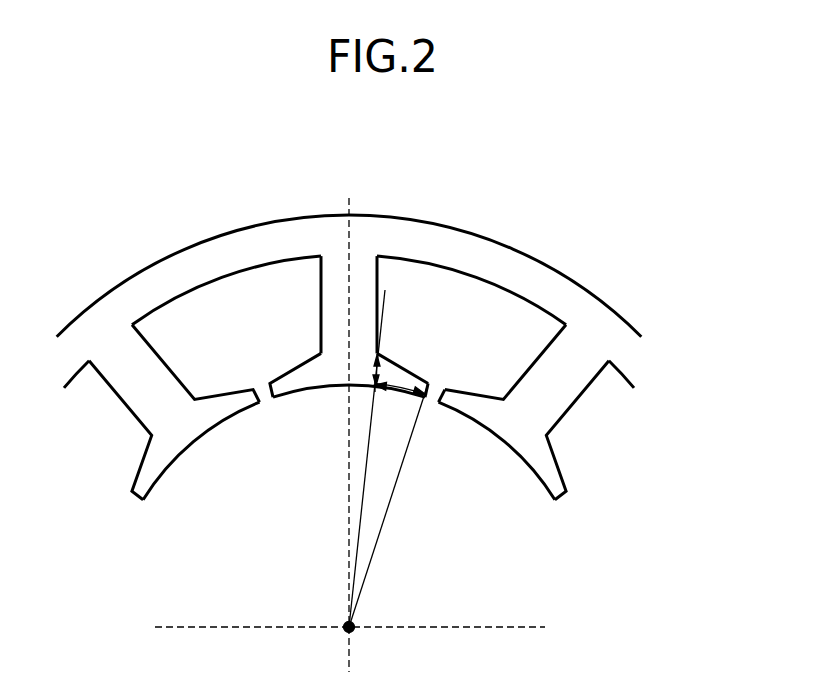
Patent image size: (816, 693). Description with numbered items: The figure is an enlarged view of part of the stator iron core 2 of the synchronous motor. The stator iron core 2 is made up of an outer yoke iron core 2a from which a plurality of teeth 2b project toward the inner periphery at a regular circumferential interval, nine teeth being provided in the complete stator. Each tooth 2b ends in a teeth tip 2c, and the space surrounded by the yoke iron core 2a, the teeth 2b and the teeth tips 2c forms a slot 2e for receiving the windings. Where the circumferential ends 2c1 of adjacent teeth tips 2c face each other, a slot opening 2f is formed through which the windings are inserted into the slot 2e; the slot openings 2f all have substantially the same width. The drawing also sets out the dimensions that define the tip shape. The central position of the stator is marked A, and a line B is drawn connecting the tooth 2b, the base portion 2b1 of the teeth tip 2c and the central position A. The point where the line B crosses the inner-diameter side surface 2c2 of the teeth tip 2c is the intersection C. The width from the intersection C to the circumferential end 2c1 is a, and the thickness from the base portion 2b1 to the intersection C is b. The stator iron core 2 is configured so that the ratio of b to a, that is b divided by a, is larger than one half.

The stator iron core 2 is at (455, 212).
The yoke iron core 2a is at (525, 280).
The teeth 2b is at (401, 358).
The base portion of the teeth tip 2b1 is at (379, 354).
The teeth tip 2c is at (336, 435).
The circumferential end of the teeth tip 2c1 is at (270, 386).
The inner-diameter side surface of the teeth tip 2c2 is at (337, 388).
The slot 2e is at (483, 337).
The slot opening 2f is at (433, 397).
The central position of the stator A is at (353, 632).
The line B is at (358, 527).
The intersection C is at (375, 392).
The width a is at (394, 390).
The thickness b is at (373, 375).